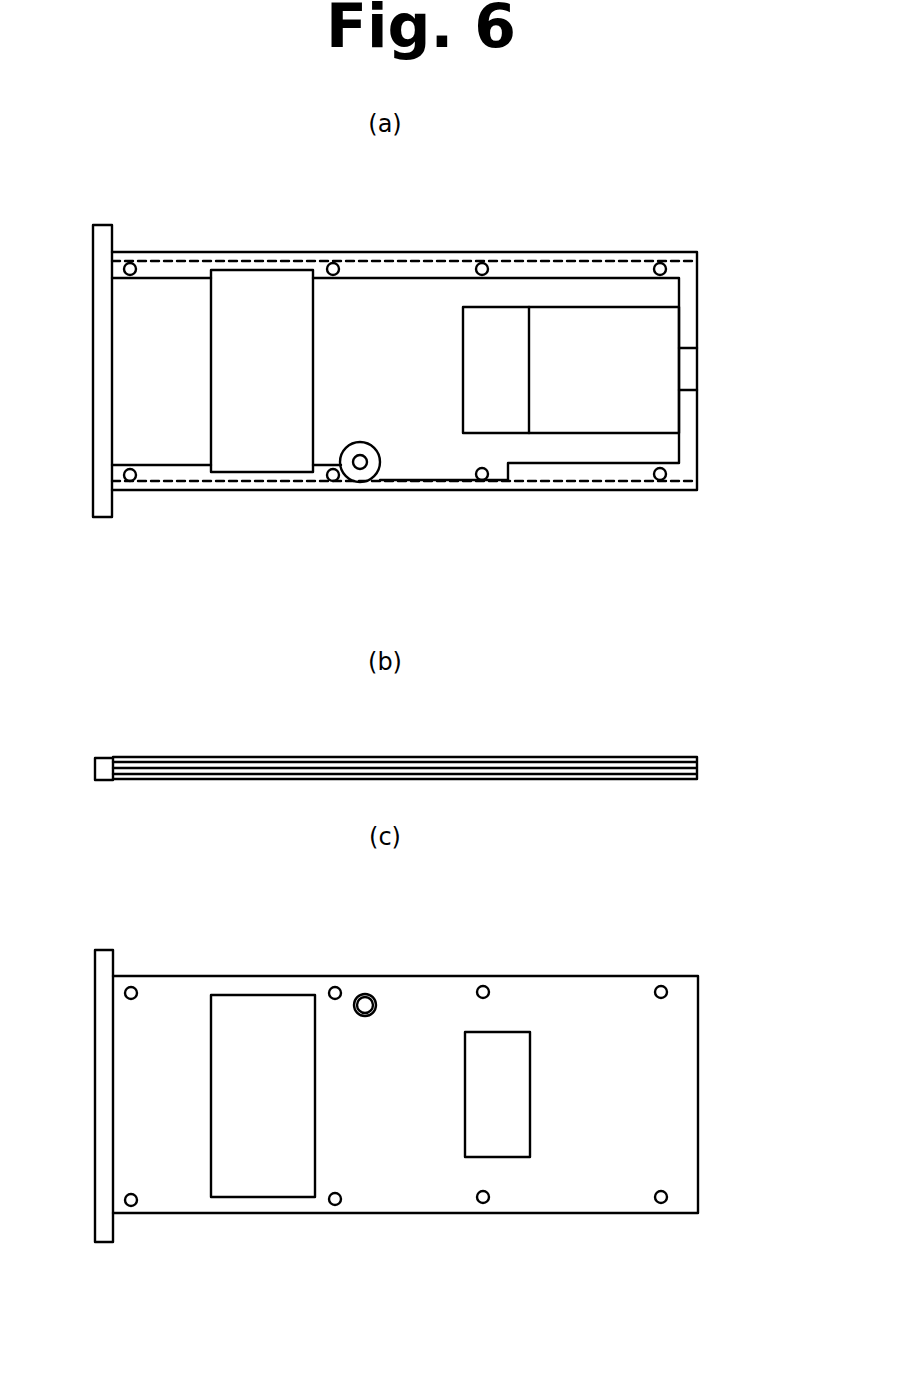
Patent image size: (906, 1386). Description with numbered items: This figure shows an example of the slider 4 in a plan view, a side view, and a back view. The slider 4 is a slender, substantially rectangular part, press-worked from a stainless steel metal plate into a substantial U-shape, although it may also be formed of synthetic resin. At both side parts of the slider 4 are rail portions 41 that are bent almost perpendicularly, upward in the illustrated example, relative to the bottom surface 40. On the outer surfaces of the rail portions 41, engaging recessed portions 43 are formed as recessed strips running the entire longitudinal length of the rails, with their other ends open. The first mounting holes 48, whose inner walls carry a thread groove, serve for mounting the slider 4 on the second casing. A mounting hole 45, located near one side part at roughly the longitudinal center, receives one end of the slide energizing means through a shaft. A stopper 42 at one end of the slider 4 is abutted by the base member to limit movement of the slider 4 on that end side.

The slider 4 is at (686, 251).
The bottom surface 40 is at (133, 365).
The rail portions 41 is at (618, 268).
The stopper 42 is at (100, 520).
The engaging recessed portions 43 is at (560, 250).
The mounting hole 45 is at (362, 482).
The first mounting holes 48 is at (130, 263).